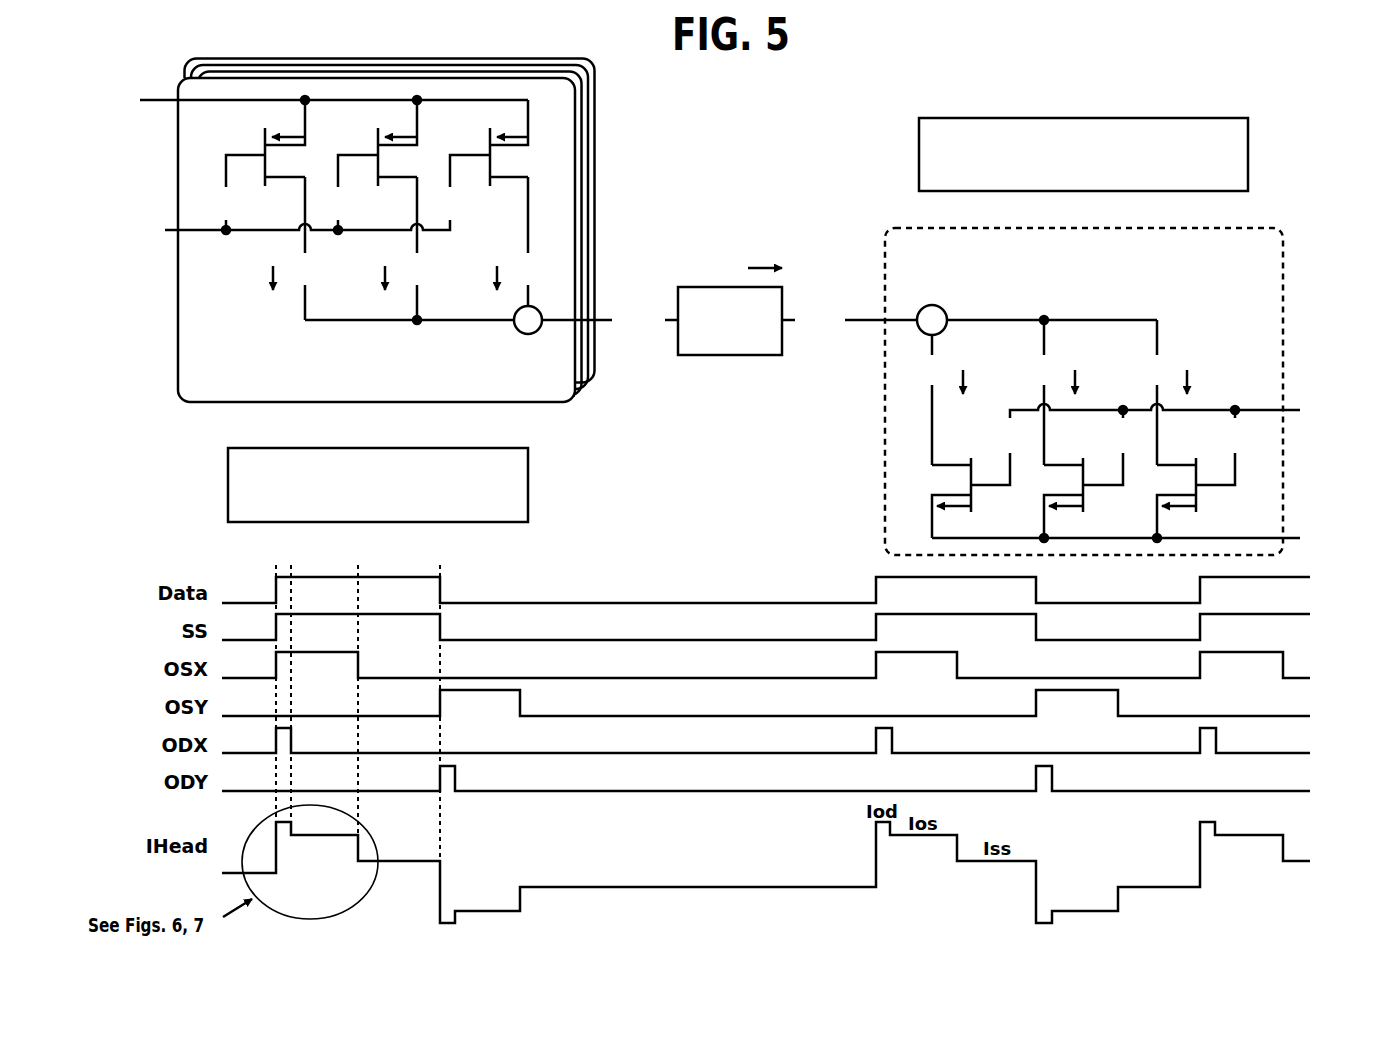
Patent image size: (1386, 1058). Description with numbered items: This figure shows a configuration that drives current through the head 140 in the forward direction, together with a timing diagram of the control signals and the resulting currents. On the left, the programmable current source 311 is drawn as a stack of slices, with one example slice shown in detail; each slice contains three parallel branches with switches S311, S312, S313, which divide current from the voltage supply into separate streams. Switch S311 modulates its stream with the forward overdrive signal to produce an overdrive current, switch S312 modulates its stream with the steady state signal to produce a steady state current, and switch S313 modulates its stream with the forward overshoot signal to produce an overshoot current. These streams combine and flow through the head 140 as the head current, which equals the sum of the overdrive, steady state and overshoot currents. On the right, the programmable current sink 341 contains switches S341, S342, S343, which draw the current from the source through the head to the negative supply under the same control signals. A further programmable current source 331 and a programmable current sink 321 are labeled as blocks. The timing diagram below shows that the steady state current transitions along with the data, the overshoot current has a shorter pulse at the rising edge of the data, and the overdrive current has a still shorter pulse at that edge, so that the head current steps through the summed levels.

The programmable current source 311 is at (415, 231).
The head 140 is at (769, 325).
The programmable current source 331 is at (1083, 154).
The programmable current sink 321 is at (378, 485).
The programmable current sink 341 is at (1135, 391).
The switch S311 is at (254, 143).
The switch S312 is at (366, 143).
The switch S313 is at (478, 143).
The switch S341 is at (1209, 495).
The switch S342 is at (1096, 495).
The switch S343 is at (984, 495).